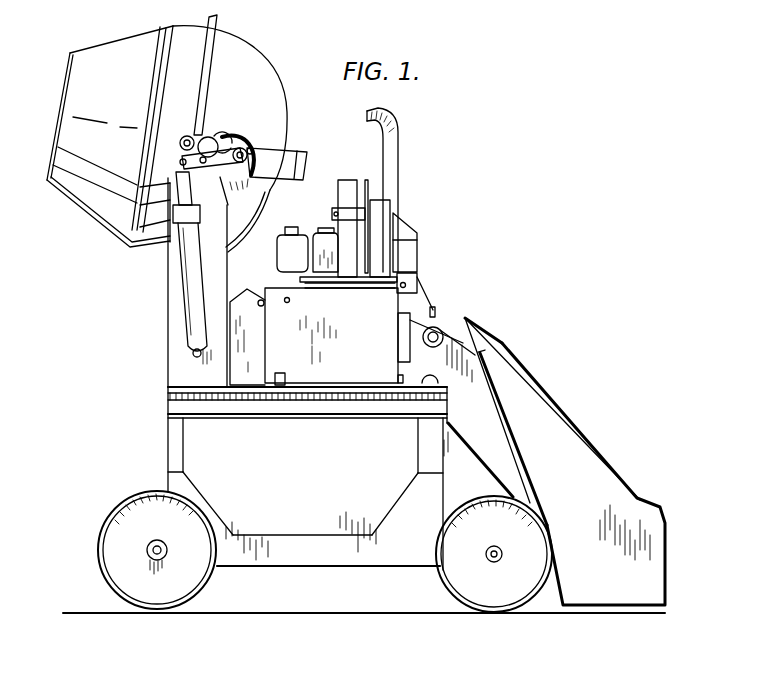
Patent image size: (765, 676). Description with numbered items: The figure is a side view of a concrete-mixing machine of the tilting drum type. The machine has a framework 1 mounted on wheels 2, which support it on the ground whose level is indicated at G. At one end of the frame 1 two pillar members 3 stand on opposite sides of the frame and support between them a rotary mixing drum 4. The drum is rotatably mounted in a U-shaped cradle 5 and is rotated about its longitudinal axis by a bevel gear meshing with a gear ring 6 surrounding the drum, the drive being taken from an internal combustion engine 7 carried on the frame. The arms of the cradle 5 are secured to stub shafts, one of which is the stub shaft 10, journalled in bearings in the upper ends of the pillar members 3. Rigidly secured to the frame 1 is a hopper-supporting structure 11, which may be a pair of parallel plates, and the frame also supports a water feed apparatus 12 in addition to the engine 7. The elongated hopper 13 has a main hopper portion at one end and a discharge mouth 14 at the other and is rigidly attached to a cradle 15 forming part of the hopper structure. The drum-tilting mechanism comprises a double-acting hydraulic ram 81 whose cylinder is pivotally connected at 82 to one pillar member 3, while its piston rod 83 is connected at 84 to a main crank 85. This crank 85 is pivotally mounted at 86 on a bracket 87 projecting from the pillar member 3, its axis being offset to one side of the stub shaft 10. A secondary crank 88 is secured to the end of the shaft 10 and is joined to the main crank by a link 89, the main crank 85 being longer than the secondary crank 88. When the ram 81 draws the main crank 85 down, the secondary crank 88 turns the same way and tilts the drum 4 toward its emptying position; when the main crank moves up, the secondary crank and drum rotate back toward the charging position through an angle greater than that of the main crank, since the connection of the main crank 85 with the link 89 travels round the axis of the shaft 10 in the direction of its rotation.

The framework 1 is at (330, 562).
The wheels 2 is at (188, 583).
The pillar members 3 is at (177, 325).
The rotary mixing drum 4 is at (112, 225).
The U-shaped cradle 5 is at (307, 156).
The gear ring 6 is at (218, 22).
The internal combustion engine 7 is at (320, 246).
The stub shaft 10 is at (222, 143).
The hopper-supporting structure 11 is at (240, 297).
The water feed apparatus 12 is at (372, 197).
The hopper 13 is at (585, 457).
The discharge mouth 14 is at (487, 337).
The cradle 15 is at (502, 472).
The double-acting hydraulic ram 81 is at (187, 268).
The pivotal connection 82 is at (192, 355).
The piston rod 83 is at (183, 182).
The connection 84 is at (181, 162).
The main crank 85 is at (246, 150).
The pivotal mounting 86 is at (248, 153).
The bracket 87 is at (232, 190).
The secondary crank 88 is at (200, 135).
The link 89 is at (159, 128).
The ground level G is at (393, 615).